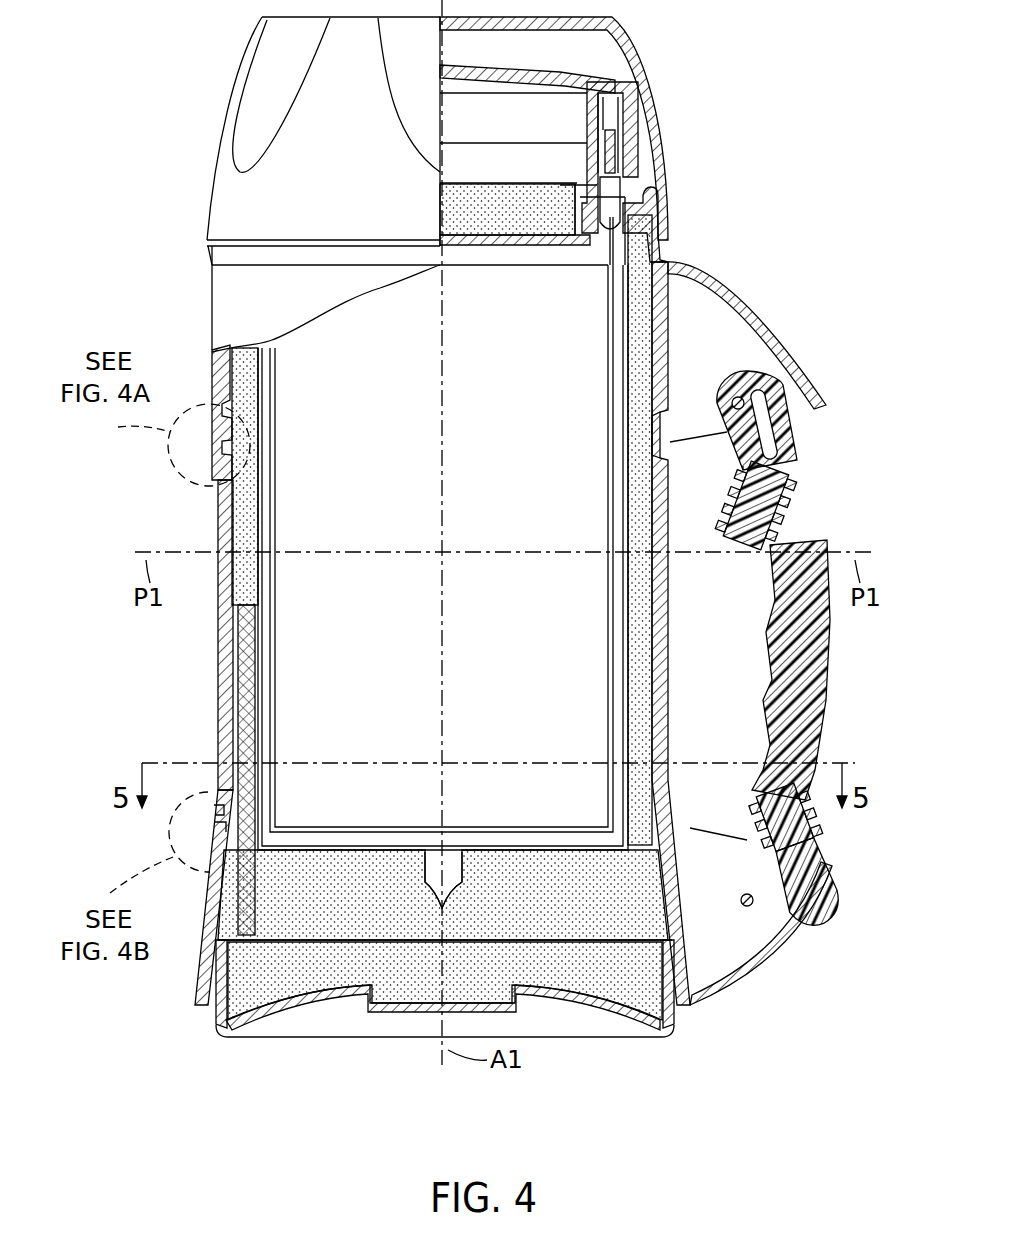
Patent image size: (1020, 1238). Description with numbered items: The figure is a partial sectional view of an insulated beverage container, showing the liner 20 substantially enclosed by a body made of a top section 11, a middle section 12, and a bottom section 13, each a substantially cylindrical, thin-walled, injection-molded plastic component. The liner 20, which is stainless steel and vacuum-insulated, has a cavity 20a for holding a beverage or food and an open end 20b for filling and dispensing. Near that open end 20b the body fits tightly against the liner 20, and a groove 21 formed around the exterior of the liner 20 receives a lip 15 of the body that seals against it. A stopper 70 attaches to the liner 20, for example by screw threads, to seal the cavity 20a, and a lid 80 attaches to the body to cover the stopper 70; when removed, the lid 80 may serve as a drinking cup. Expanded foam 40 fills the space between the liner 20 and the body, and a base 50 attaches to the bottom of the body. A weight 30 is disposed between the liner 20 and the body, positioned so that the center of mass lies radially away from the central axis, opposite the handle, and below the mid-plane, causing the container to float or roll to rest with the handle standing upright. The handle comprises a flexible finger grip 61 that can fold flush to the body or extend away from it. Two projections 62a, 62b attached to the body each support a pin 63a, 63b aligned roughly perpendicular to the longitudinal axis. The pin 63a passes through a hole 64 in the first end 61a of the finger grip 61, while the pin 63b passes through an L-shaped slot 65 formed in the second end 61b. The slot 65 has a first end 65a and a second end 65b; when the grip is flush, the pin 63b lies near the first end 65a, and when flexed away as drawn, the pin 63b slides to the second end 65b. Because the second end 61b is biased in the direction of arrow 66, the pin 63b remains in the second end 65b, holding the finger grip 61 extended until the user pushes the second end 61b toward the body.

The lid 80 is at (210, 160).
The stopper 70 is at (592, 84).
The lip 15 is at (647, 202).
The groove 21 is at (606, 265).
The liner 20 is at (272, 707).
The cavity 20a is at (508, 588).
The open end 20b is at (469, 284).
The expanded foam 40 is at (640, 333).
The top section 11 is at (210, 362).
The middle section 12 is at (222, 655).
The bottom section 13 is at (195, 967).
The weight 30 is at (262, 908).
The base 50 is at (390, 1017).
The finger grip 61 is at (773, 580).
The first end 61a is at (753, 804).
The second end 61b is at (728, 503).
The projection 62a is at (745, 984).
The projection 62b is at (748, 306).
The pin 63a is at (748, 914).
The pin 63b is at (732, 398).
The hole 64 is at (796, 909).
The L-shaped slot 65 is at (722, 420).
The first end of slot 65a is at (821, 495).
The second end of slot 65b is at (739, 396).
The arrow 66 is at (728, 454).